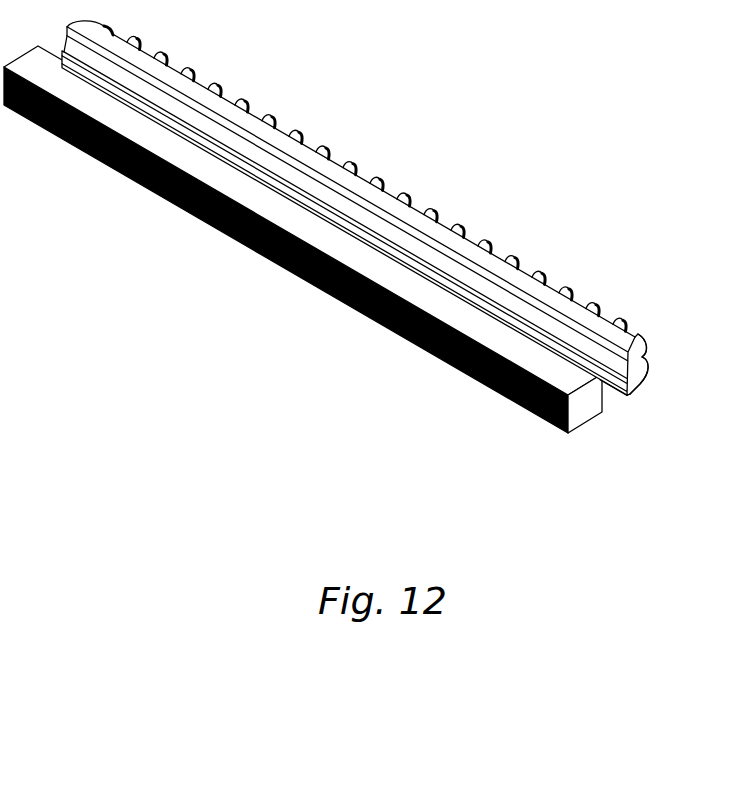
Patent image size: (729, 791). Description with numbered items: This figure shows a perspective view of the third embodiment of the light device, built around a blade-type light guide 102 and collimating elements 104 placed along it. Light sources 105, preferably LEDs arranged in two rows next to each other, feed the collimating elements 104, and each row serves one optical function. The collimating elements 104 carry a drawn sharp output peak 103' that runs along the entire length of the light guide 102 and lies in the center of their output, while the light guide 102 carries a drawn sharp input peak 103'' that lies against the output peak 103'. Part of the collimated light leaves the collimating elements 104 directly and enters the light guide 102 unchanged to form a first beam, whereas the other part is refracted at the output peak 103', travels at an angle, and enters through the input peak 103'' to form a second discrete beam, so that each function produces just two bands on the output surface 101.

The output surface 101 is at (280, 266).
The light guide 102 is at (582, 414).
The output peak 103' is at (679, 409).
The input peak 103'' is at (629, 440).
The collimating elements 104 is at (605, 328).
The light sources 105 is at (648, 361).